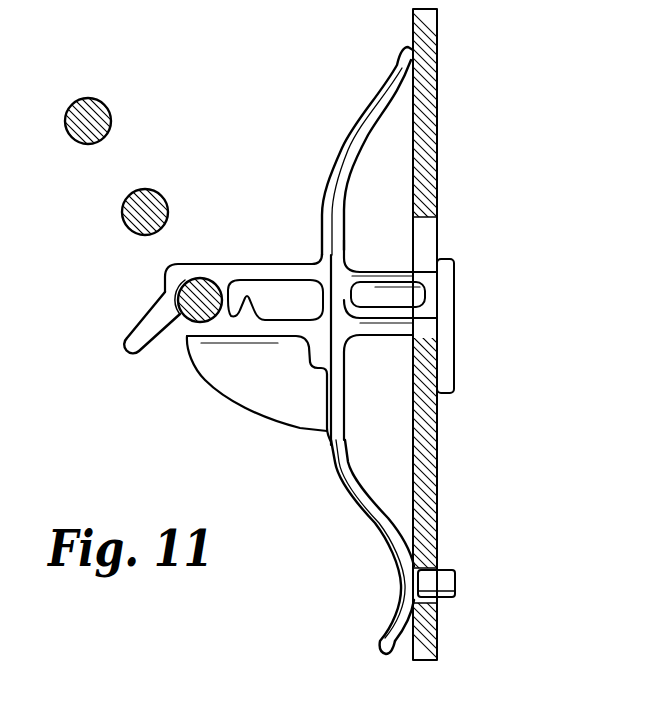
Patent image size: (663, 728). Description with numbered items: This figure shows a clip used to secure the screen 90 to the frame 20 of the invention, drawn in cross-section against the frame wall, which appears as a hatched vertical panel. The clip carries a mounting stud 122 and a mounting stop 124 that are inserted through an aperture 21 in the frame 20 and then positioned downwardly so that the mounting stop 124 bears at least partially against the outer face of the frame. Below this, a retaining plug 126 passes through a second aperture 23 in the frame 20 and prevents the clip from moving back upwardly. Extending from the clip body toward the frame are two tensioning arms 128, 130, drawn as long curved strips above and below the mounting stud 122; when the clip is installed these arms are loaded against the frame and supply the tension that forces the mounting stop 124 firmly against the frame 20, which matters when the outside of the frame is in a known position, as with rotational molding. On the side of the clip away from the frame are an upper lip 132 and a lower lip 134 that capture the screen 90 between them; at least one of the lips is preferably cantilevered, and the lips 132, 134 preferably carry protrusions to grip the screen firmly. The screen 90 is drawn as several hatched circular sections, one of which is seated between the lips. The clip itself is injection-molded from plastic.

The frame 20 is at (430, 56).
The aperture 21 is at (428, 234).
The aperture 23 is at (443, 570).
The screen 90 is at (115, 118).
The mounting stud 122 is at (375, 270).
The mounting stop 124 is at (455, 298).
The retaining plug 126 is at (458, 582).
The tensioning arm 128 is at (362, 523).
The tensioning arm 130 is at (363, 113).
The upper lip 132 is at (137, 322).
The lower lip 134 is at (282, 405).